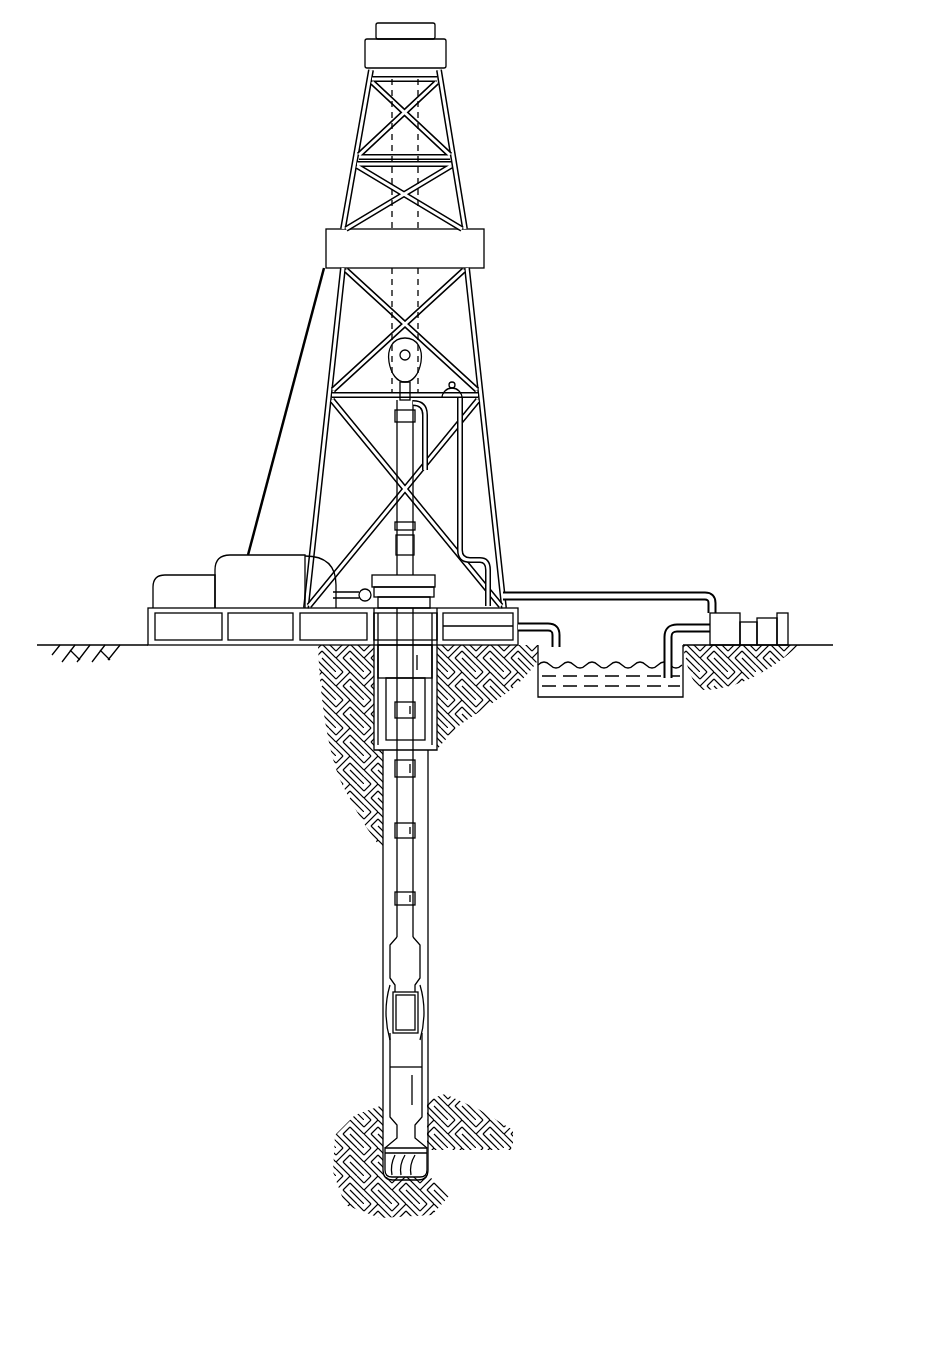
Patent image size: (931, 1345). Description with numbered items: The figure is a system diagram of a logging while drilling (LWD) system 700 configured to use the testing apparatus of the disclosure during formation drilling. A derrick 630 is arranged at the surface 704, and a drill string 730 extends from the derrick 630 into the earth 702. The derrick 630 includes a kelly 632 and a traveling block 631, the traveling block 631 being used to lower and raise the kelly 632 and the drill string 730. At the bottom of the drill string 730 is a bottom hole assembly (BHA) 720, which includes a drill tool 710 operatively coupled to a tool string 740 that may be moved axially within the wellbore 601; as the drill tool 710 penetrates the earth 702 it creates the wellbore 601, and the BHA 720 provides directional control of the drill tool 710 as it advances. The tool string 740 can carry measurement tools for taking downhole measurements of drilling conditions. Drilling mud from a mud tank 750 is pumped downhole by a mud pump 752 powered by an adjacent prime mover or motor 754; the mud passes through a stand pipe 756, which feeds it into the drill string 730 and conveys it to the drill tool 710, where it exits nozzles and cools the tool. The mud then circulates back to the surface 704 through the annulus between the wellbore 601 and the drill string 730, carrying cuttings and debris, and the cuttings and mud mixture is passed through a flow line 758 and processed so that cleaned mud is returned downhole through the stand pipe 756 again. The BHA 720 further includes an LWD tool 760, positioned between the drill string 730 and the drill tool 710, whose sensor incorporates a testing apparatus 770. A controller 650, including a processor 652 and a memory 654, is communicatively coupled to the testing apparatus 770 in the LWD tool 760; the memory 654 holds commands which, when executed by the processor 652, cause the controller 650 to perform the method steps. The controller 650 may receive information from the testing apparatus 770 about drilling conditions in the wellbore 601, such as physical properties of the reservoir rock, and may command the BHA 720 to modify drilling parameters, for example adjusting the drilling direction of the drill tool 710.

The logging while drilling (LWD) system 700 is at (252, 80).
The derrick 630 is at (454, 147).
The traveling block 631 is at (388, 372).
The kelly 632 is at (395, 447).
The stand pipe 756 is at (463, 475).
The flow line 758 is at (543, 620).
The mud tank 750 is at (608, 670).
The mud pump 752 is at (725, 612).
The motor 754 is at (780, 617).
The surface 704 is at (78, 645).
The controller 650 is at (305, 708).
The processor 652 is at (188, 632).
The memory 654 is at (263, 632).
The earth 702 is at (603, 906).
The wellbore 601 is at (430, 816).
The drill string 730 is at (414, 800).
The bottom hole assembly (BHA) 720 is at (500, 1042).
The LWD tool 760 is at (390, 987).
The testing apparatus 770 is at (393, 1012).
The tool string 740 is at (398, 1085).
The drill tool 710 is at (428, 1150).